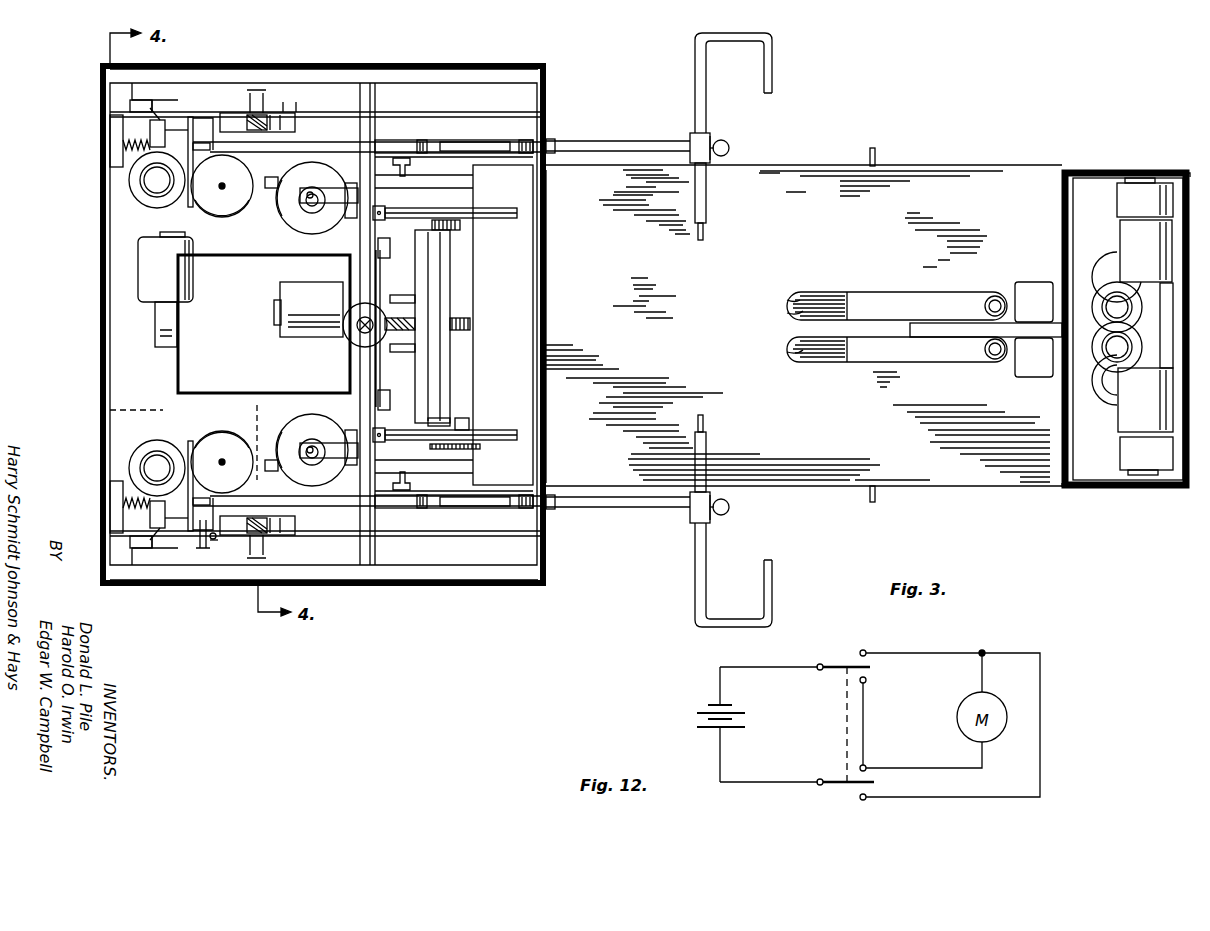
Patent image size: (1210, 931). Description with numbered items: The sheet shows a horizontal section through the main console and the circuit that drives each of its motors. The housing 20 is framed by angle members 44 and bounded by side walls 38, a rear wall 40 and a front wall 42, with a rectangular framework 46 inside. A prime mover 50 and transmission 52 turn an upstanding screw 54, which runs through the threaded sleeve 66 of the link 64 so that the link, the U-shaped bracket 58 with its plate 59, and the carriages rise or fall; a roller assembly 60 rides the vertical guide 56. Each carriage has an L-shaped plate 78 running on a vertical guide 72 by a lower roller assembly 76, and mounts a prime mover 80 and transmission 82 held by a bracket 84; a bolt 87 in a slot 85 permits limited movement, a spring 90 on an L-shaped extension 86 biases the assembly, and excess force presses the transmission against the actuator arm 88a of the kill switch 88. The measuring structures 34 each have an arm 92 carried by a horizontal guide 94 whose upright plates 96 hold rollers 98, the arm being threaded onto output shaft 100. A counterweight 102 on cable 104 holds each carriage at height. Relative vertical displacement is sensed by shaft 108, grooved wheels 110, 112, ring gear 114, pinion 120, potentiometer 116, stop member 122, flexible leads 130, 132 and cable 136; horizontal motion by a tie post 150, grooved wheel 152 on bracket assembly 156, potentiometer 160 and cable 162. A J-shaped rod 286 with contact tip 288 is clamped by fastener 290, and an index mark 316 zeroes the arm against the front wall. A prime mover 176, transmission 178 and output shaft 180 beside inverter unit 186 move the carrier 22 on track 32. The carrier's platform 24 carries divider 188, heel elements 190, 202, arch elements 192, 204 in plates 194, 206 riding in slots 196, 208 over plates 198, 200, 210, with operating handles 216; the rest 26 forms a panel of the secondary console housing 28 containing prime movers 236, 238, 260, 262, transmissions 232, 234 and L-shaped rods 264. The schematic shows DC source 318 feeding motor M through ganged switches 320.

In FIG. 3, the housing 20 is at (552, 59).
In FIG. 3, the carrier 22 is at (786, 159).
In FIG. 3, the platform 24 is at (1002, 478).
In FIG. 3, the rest 26 is at (1062, 224).
In FIG. 3, the housing 28 is at (1189, 172).
In FIG. 3, the track 32 is at (270, 178).
In FIG. 3, the measuring structures 34 is at (638, 137).
In FIG. 3, the side walls 38 is at (288, 64).
In FIG. 3, the rear wall 40 is at (100, 225).
In FIG. 3, the front wall 42 is at (547, 278).
In FIG. 3, the angle members 44 is at (100, 70).
In FIG. 3, the framework 46 is at (372, 572).
In FIG. 3, the prime mover 50 is at (290, 292).
In FIG. 3, the transmission 52 is at (352, 350).
In FIG. 3, the screw 54 is at (346, 322).
In FIG. 3, the vertical guide 56 is at (418, 325).
In FIG. 3, the bracket 58 is at (425, 238).
In FIG. 3, the plate 59 is at (412, 300).
In FIG. 3, the roller assembly 60 is at (414, 352).
In FIG. 3, the link 64 is at (381, 268).
In FIG. 3, the sleeve 66 is at (332, 340).
In FIG. 3, the vertical guide 72 is at (300, 112).
In FIG. 3, the lower roller assembly 76 is at (236, 113).
In FIG. 3, the plate 78 is at (372, 108).
In FIG. 3, the prime mover 80 is at (130, 181).
In FIG. 3, the transmission 82 is at (150, 132).
In FIG. 3, the bracket 84 is at (191, 196).
In FIG. 3, the slot 85 is at (200, 550).
In FIG. 3, the extension 86 is at (110, 120).
In FIG. 3, the bolt 87 is at (214, 545).
In FIG. 3, the kill switch 88 is at (130, 105).
In FIG. 3, the actuator arm 88a is at (155, 115).
In FIG. 3, the spring 90 is at (122, 147).
In FIG. 3, the arm 92 is at (326, 146).
In FIG. 3, the horizontal guide 94 is at (440, 133).
In FIG. 3, the upright plates 96 is at (466, 144).
In FIG. 3, the rollers 98 is at (537, 145).
In FIG. 3, the output shaft 100 is at (200, 152).
In FIG. 3, the counterweight 102 is at (204, 212).
In FIG. 3, the cable 104 is at (222, 190).
In FIG. 3, the shaft 108 is at (445, 376).
In FIG. 3, the grooved wheel 110 is at (468, 208).
In FIG. 3, the grooved wheel 112 is at (526, 432).
In FIG. 3, the ring gear 114 is at (480, 456).
In FIG. 3, the potentiometer 116 is at (470, 428).
In FIG. 3, the pinion 120 is at (482, 446).
In FIG. 3, the stop member 122 is at (384, 433).
In FIG. 3, the flexible lead 130 is at (455, 420).
In FIG. 3, the flexible lead 132 is at (396, 208).
In FIG. 3, the cable 136 is at (346, 226).
In FIG. 3, the tie post 150 is at (410, 170).
In FIG. 3, the grooved wheel 152 is at (284, 216).
In FIG. 3, the bracket assembly 156 is at (338, 200).
In FIG. 3, the potentiometer 160 is at (316, 208).
In FIG. 3, the cable 162 is at (388, 152).
In FIG. 3, the prime mover 176 is at (138, 262).
In FIG. 3, the transmission 178 is at (155, 340).
In FIG. 3, the output shaft 180 is at (470, 328).
In FIG. 3, the inverter unit 186 is at (196, 377).
In FIG. 3, the divider 188 is at (958, 323).
In FIG. 3, the heel-supporting element 190 is at (1034, 290).
In FIG. 3, the arch-supporting element 192 is at (988, 296).
In FIG. 3, the plate 194 is at (874, 300).
In FIG. 3, the slot 196 is at (820, 292).
In FIG. 3, the plate 198 is at (790, 300).
In FIG. 3, the plate 200 is at (790, 352).
In FIG. 3, the heel-supporting element 202 is at (1034, 378).
In FIG. 3, the arch-supporting element 204 is at (995, 360).
In FIG. 3, the plate 206 is at (932, 362).
In FIG. 3, the slot 208 is at (824, 362).
In FIG. 3, the plate 210 is at (795, 354).
In FIG. 3, the operating handles 216 is at (877, 154).
In FIG. 3, the transmission 232 is at (1133, 293).
In FIG. 3, the transmission 234 is at (1140, 368).
In FIG. 3, the prime mover 236 is at (1134, 235).
In FIG. 3, the prime mover 238 is at (1125, 422).
In FIG. 3, the prime mover 260 is at (1136, 185).
In FIG. 3, the prime mover 262 is at (1130, 455).
In FIG. 3, the L-shaped rods 264 is at (1170, 312).
In FIG. 3, the J-shaped rod 286 is at (773, 78).
In FIG. 3, the contact tip 288 is at (706, 232).
In FIG. 3, the fastener 290 is at (730, 148).
In FIG. 3, the index mark 316 is at (556, 152).
In FIG. 12, the DC source 318 is at (718, 706).
In FIG. 12, the switches 320 is at (835, 672).